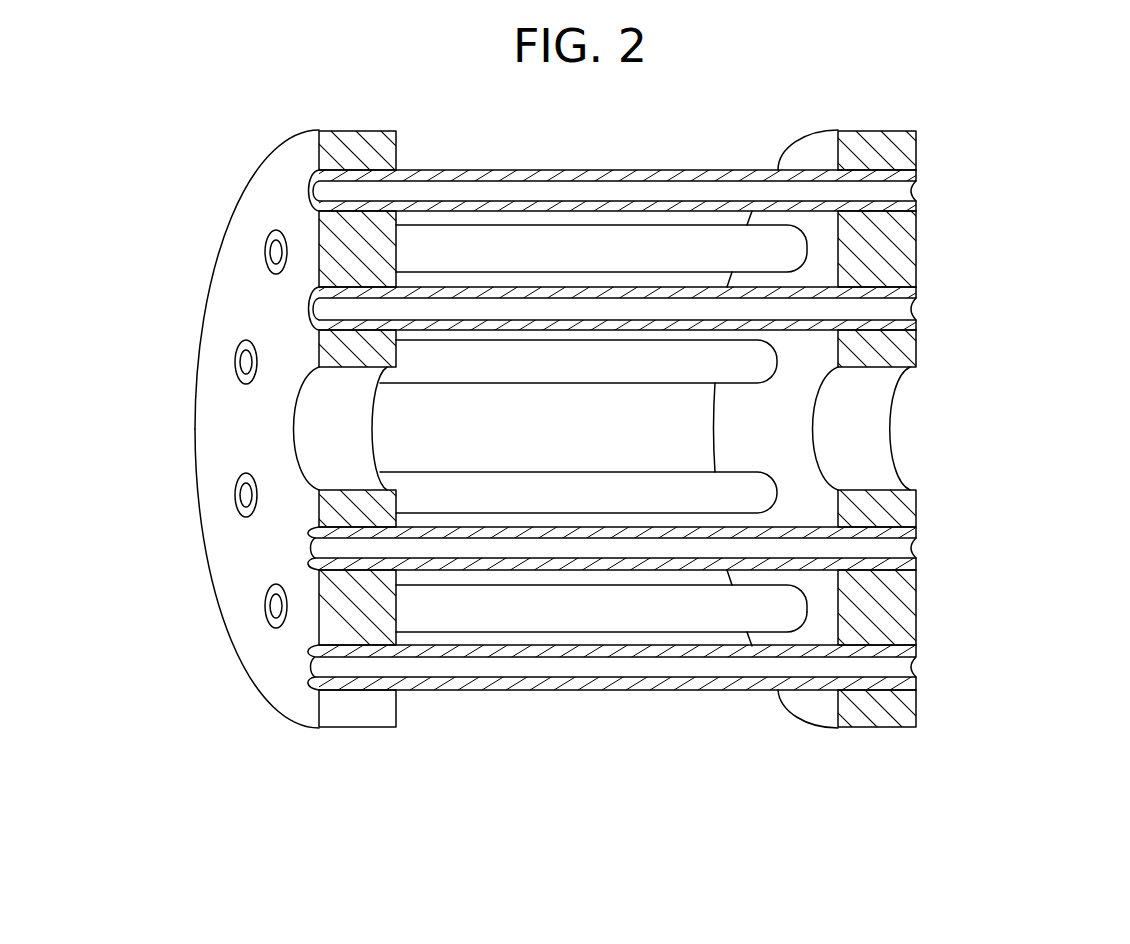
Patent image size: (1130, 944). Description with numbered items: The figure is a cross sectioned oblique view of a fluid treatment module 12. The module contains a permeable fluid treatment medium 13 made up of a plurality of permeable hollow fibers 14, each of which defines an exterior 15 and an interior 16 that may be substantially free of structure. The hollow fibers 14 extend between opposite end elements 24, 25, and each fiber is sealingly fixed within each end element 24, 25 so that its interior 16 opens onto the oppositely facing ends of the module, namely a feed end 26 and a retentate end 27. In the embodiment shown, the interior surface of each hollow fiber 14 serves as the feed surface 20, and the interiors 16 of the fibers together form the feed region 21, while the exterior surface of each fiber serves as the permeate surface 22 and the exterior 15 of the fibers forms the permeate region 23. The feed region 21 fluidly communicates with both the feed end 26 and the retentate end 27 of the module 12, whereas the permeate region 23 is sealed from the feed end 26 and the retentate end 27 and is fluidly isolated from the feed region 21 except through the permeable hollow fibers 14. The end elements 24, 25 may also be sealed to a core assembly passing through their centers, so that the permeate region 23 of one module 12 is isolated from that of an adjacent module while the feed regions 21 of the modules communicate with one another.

The fluid treatment module 12 is at (270, 188).
The permeable fluid treatment medium 13 is at (588, 683).
The permeable hollow fibers 14 is at (525, 805).
The exterior 15 is at (601, 705).
The interior 16 is at (612, 746).
The feed surface 20 is at (682, 657).
The feed region 21 is at (485, 545).
The permeate surface 22 is at (797, 523).
The permeate region 23 is at (601, 702).
The end element 24 is at (232, 580).
The end element 25 is at (898, 575).
The feed end 26 is at (222, 275).
The retentate end 27 is at (915, 247).